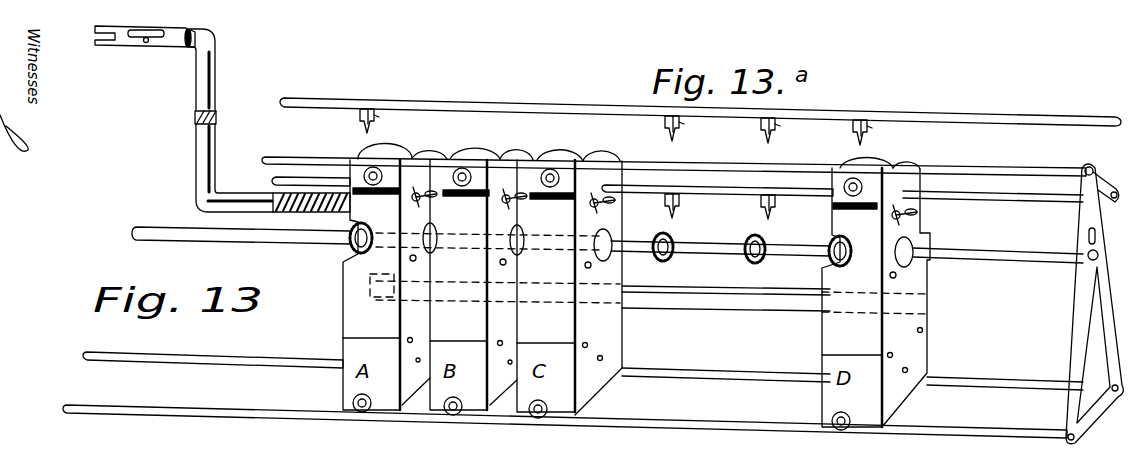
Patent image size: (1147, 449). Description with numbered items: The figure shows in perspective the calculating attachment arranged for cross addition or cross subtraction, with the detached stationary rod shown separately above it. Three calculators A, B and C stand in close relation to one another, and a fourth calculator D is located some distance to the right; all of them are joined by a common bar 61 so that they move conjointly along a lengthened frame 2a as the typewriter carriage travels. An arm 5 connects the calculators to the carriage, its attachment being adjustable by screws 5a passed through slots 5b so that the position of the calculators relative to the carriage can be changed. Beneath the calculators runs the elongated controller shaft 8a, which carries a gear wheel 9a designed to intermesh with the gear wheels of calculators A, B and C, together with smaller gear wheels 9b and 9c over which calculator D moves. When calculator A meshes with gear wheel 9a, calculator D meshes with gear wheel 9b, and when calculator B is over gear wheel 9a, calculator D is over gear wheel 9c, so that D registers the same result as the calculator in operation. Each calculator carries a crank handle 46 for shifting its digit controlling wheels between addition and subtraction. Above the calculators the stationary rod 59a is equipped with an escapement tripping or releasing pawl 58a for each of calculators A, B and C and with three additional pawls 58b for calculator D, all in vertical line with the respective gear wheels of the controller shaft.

In FIG. 13, the frame 2a is at (674, 157).
In FIG. 13, the arm 5 is at (215, 160).
In FIG. 13, the screws 5a is at (152, 36).
In FIG. 13, the slots 5b is at (110, 37).
In FIG. 13, the elongated controller shaft 8a is at (304, 242).
In FIG. 13, the gear wheel 9a is at (357, 249).
In FIG. 13, the smaller gear wheel 9b is at (832, 262).
In FIG. 13, the smaller gear wheel 9c is at (754, 261).
In FIG. 13, the crank handle 46 is at (604, 207).
In FIG. 13a, the escapement tripping or releasing pawl 58a is at (362, 126).
In FIG. 13a, the additional pawls 58b is at (684, 128).
In FIG. 13, the additional pawls 58b is at (772, 212).
In FIG. 13a, the stationary rod 59a is at (344, 104).
In FIG. 13, the stationary rod 59a is at (690, 196).
In FIG. 13, the common bar 61 is at (753, 311).